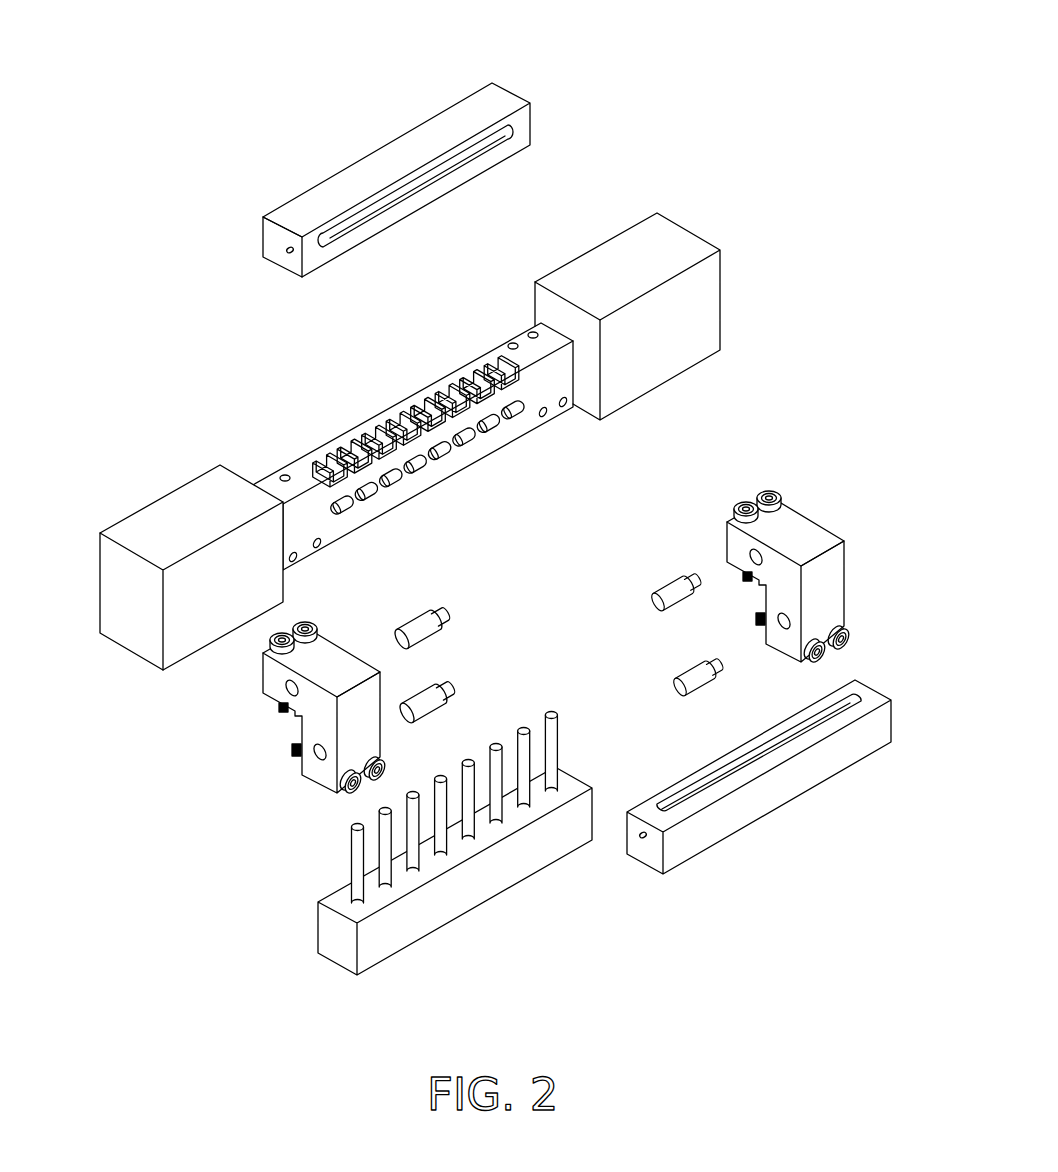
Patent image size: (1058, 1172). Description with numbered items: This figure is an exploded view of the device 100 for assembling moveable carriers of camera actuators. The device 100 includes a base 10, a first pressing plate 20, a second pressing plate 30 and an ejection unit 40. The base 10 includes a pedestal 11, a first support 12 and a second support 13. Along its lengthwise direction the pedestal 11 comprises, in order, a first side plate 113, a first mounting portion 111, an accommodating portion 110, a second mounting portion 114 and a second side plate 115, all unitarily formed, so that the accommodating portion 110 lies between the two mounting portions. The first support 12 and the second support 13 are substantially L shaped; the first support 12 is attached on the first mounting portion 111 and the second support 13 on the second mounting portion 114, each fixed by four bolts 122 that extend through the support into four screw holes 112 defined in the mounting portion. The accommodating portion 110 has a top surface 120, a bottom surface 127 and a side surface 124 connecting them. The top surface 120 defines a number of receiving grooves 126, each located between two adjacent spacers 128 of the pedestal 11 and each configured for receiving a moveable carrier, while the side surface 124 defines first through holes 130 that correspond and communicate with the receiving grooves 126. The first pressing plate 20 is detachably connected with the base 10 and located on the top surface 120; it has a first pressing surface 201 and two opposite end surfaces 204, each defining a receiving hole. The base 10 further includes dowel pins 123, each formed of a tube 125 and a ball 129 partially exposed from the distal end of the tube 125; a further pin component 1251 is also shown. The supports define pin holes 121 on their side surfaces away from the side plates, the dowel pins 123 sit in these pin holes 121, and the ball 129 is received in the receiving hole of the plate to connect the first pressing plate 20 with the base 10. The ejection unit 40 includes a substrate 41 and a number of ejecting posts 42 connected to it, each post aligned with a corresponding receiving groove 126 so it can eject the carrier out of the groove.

The device 100 is at (556, 33).
The base 10 is at (703, 197).
The pedestal 11 is at (627, 253).
The first support 12 is at (783, 520).
The second support 13 is at (277, 678).
The first pressing plate 20 is at (408, 105).
The second pressing plate 30 is at (813, 765).
The ejection unit 40 is at (565, 944).
The substrate 41 is at (492, 868).
The ejecting posts 42 is at (400, 865).
The accommodating portion 110 is at (541, 509).
The first mounting portion 111 is at (505, 356).
The screw holes 112 is at (550, 413).
The first side plate 113 is at (547, 305).
The second mounting portion 114 is at (290, 473).
The second side plate 115 is at (237, 462).
The top surface 120 is at (458, 437).
The pin holes 121 is at (750, 553).
The bolts 122 is at (847, 633).
The dowel pins 123 is at (590, 692).
The side surface 124 is at (435, 473).
The tube 125 is at (661, 653).
The positioning pin 1251 is at (676, 688).
The receiving grooves 126 is at (332, 458).
The bottom surface 127 is at (396, 520).
The spacers 128 is at (377, 428).
The ball 129 is at (653, 612).
The first through holes 130 is at (367, 504).
The first pressing surface 201 is at (352, 258).
The end surfaces 204 is at (275, 234).